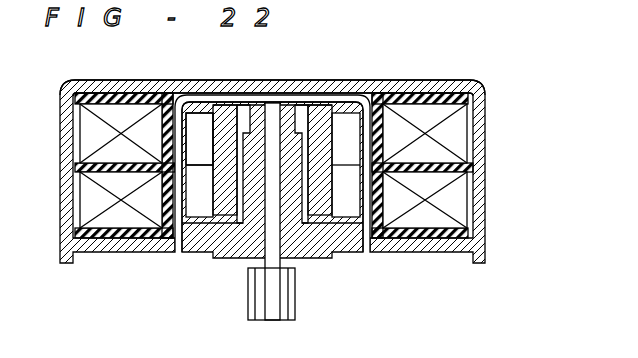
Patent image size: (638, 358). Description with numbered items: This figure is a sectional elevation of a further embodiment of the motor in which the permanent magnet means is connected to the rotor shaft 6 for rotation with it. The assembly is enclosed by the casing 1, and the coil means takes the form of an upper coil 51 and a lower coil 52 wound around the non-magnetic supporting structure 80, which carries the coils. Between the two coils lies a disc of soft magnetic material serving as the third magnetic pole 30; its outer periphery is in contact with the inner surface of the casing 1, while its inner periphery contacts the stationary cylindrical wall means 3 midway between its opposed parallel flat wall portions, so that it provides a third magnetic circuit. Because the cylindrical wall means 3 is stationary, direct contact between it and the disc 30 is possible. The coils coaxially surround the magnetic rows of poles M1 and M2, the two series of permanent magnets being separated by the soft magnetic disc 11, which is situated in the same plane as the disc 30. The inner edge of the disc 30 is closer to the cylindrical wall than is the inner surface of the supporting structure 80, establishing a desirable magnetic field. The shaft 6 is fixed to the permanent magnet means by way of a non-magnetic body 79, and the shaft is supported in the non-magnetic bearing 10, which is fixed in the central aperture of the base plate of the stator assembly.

The casing 1 is at (480, 105).
The non-magnetic supporting structure 80 is at (460, 80).
The cylindrical wall means 3 is at (372, 88).
The non-magnetic body 79 is at (322, 115).
The rotor shaft 6 is at (270, 113).
The soft magnetic disc 11 is at (205, 127).
The magnetic row of poles M1 is at (190, 160).
The magnetic row of poles M2 is at (197, 188).
The upper coil 51 is at (450, 137).
The lower coil 52 is at (450, 205).
The third magnetic pole disc 30 is at (453, 167).
The bearing 10 is at (310, 242).